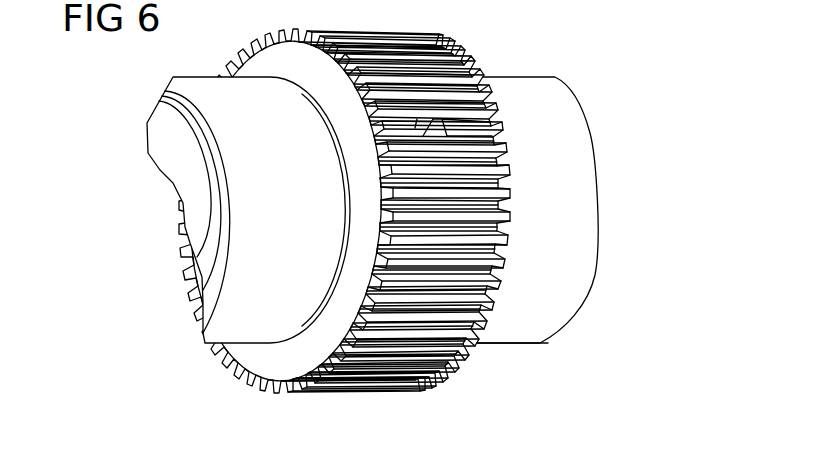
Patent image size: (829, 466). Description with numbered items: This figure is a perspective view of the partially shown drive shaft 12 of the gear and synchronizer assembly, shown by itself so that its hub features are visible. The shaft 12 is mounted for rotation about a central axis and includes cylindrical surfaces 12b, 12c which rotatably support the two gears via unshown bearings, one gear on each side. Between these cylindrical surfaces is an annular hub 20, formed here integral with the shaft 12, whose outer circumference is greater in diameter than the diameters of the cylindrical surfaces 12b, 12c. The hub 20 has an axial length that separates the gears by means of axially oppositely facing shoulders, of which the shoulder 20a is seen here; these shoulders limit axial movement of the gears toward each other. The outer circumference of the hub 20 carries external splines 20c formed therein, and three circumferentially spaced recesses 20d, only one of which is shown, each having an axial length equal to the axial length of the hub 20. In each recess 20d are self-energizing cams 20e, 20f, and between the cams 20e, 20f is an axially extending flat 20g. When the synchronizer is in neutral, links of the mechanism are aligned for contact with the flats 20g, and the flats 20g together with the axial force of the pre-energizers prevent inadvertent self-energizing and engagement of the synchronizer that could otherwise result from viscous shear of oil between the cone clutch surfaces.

The shaft 12 is at (617, 269).
The cylindrical surface 12b is at (205, 77).
The cylindrical surface 12c is at (487, 344).
The annular hub 20 is at (405, 231).
The shoulder 20a is at (257, 360).
The external splines 20c is at (507, 251).
The recess 20d is at (497, 130).
The self-energizing cam 20e is at (417, 123).
The self-energizing cam 20f is at (487, 130).
The flat 20g is at (438, 120).